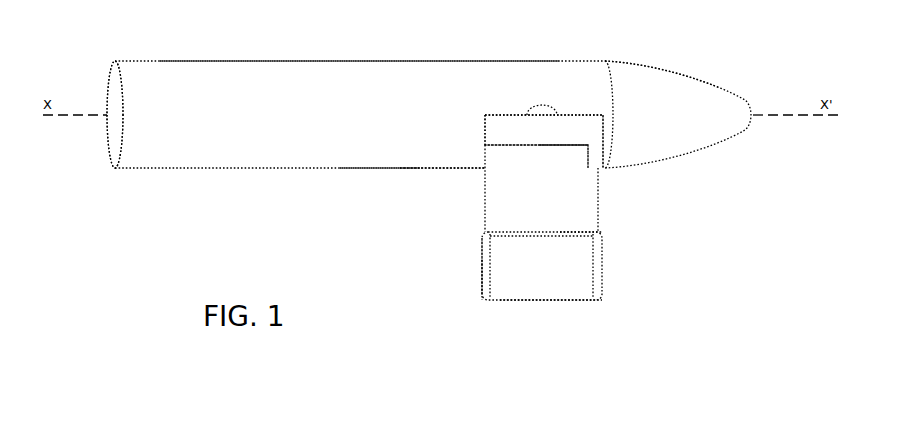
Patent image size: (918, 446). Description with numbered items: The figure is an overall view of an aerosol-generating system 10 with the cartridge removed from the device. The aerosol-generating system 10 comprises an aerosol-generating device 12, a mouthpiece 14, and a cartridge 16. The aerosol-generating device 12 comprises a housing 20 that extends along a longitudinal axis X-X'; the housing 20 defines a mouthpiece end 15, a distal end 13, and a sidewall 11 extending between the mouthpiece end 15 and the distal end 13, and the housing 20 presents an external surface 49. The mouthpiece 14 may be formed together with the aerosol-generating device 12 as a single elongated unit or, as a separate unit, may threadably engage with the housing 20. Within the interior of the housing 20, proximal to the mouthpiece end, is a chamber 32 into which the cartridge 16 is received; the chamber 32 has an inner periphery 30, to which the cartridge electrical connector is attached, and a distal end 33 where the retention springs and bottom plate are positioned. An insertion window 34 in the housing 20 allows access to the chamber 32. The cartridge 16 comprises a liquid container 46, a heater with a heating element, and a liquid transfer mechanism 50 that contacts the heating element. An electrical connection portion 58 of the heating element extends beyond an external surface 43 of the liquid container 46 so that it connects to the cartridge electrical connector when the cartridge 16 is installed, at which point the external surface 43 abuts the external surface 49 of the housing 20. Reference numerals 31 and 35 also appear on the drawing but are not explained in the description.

The aerosol-generating system 10 is at (190, 217).
The sidewall 11 is at (420, 170).
The aerosol-generating device 12 is at (152, 177).
The distal end 13 is at (136, 50).
The mouthpiece 14 is at (705, 78).
The mouthpiece end 15 is at (602, 42).
The cartridge 16 is at (472, 250).
The housing 20 is at (296, 168).
The inner periphery 30 is at (500, 139).
The housing upper wall 31 is at (525, 128).
The chamber 32 is at (572, 138).
The distal end of the chamber 33 is at (498, 148).
The insertion window 34 is at (560, 152).
The housing end wall 35 is at (594, 120).
The external surface 43 is at (553, 300).
The liquid container 46 is at (482, 283).
The external surface of the housing 49 is at (373, 168).
The liquid transfer mechanism 50 is at (602, 272).
The electrical connection portion 58 is at (592, 231).